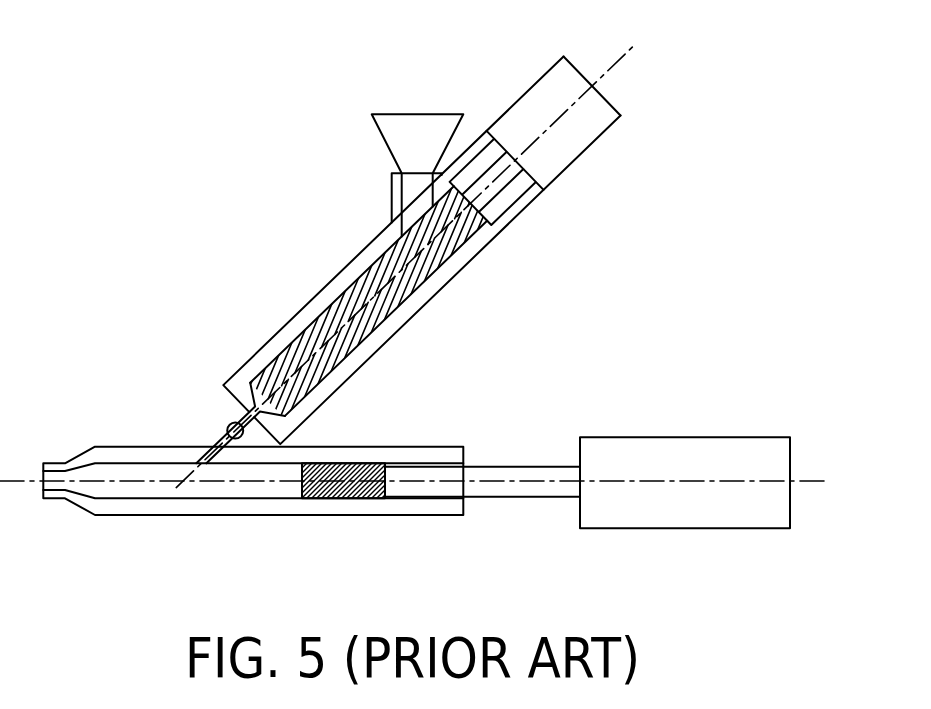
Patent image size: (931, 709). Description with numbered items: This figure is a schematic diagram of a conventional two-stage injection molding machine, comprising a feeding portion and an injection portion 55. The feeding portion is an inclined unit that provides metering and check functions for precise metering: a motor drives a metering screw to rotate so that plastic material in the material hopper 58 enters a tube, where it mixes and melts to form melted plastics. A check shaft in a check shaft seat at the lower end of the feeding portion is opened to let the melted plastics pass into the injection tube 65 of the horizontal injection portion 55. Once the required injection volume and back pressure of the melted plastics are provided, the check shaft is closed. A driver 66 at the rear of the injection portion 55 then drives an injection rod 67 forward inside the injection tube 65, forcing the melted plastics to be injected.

The injection portion 55 is at (443, 532).
The material hopper 58 is at (431, 130).
The injection tube 65 is at (238, 480).
The driver 66 is at (688, 497).
The injection rod 67 is at (338, 498).